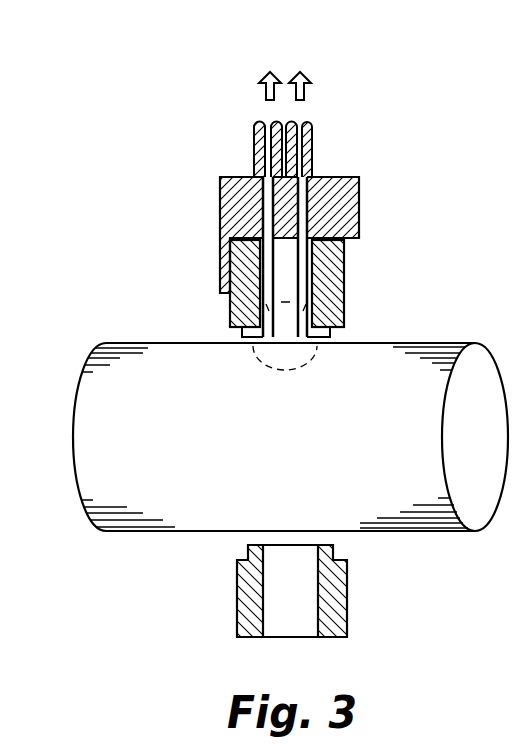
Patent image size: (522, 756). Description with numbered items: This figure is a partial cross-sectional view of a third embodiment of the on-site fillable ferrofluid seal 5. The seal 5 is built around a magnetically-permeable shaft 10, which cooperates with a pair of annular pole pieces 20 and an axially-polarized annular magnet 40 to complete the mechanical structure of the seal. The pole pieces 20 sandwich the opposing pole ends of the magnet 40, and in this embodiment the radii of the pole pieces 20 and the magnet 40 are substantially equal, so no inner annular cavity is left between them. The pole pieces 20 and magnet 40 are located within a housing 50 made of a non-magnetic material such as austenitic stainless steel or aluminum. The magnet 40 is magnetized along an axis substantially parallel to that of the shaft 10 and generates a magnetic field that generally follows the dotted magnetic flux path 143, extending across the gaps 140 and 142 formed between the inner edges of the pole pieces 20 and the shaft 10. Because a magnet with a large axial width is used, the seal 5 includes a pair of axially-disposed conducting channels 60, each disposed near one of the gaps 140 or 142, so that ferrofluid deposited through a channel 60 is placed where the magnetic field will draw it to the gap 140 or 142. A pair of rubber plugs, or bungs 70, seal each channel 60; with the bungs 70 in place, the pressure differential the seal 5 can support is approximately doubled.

The fillable ferrofluid seal 5 is at (122, 183).
The shaft 10 is at (85, 450).
The pole pieces 20 is at (242, 303).
The magnet 40 is at (345, 257).
The housing 50 is at (359, 189).
The conducting channels 60 is at (267, 170).
The rubber bungs 70 is at (300, 72).
The gap 140 is at (255, 342).
The gap 142 is at (330, 341).
The magnetic flux path 143 is at (278, 372).